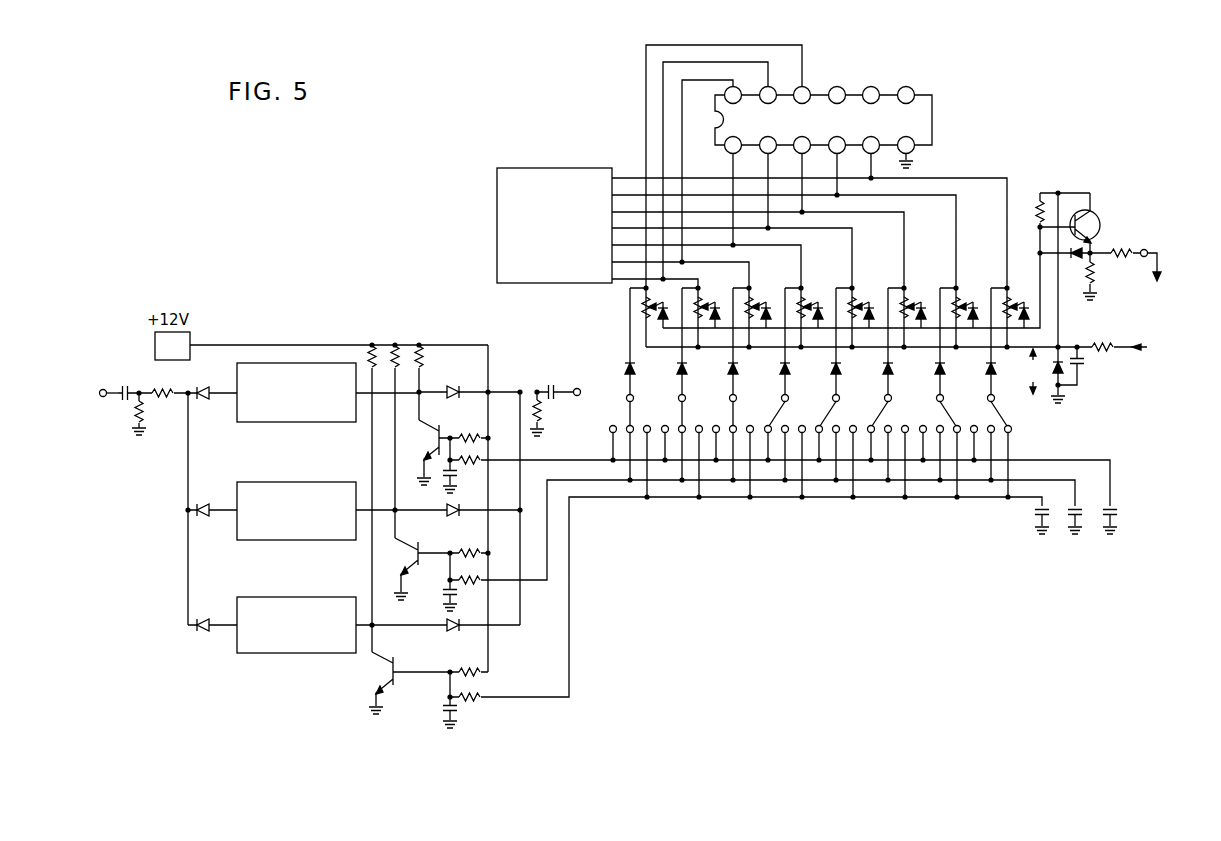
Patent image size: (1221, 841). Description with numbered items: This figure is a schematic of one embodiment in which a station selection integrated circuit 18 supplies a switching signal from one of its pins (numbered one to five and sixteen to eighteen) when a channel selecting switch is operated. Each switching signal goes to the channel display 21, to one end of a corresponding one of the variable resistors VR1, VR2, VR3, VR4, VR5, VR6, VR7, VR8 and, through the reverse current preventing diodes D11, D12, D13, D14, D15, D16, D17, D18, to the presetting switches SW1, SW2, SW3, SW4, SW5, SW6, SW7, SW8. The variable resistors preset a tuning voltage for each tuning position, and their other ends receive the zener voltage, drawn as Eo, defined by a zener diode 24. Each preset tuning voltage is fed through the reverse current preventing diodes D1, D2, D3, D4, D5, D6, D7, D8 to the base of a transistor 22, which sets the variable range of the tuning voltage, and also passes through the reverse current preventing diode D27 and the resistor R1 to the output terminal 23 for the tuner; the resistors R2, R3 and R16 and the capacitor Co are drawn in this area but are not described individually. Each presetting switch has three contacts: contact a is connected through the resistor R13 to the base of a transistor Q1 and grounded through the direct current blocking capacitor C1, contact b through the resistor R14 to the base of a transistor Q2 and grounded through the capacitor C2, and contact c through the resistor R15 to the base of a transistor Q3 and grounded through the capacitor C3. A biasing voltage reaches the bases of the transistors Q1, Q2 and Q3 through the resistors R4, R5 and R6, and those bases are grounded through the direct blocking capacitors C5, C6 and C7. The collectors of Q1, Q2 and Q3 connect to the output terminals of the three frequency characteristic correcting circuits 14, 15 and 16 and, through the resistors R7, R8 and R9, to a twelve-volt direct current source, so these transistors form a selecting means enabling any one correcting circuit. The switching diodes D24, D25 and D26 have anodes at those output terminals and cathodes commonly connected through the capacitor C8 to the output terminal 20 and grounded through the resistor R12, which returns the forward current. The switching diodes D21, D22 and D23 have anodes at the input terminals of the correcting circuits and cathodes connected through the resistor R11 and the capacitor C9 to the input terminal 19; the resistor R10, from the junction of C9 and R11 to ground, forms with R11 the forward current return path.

The frequency characteristic correcting circuit 14 is at (292, 603).
The frequency characteristic correcting circuit 15 is at (288, 486).
The frequency characteristic correcting circuit 16 is at (277, 422).
The station selection integrated circuit 18 is at (932, 100).
The input terminal 19 is at (102, 390).
The output terminal 20 is at (577, 388).
The channel display 21 is at (545, 166).
The transistor 22 is at (1097, 213).
The output terminal 23 is at (1146, 249).
The zener diode 24 is at (1048, 387).
The resistor R1 is at (1118, 258).
The resistor R2 is at (1096, 281).
The resistor R3 is at (1038, 209).
The resistor R4 is at (471, 667).
The resistor R5 is at (471, 552).
The resistor R6 is at (471, 435).
The resistor R7 is at (374, 348).
The resistor R8 is at (398, 348).
The resistor R9 is at (424, 360).
The resistor R10 is at (137, 416).
The resistor R11 is at (163, 399).
The resistor R12 is at (541, 410).
The resistor R13 is at (473, 703).
The resistor R14 is at (474, 587).
The resistor R15 is at (473, 467).
The resistor R16 is at (1106, 351).
The direct current blocking capacitor C1 is at (1032, 522).
The direct current blocking capacitor C2 is at (1065, 522).
The direct current blocking capacitor C3 is at (1100, 522).
The direct blocking capacitor C5 is at (443, 477).
The direct blocking capacitor C6 is at (442, 594).
The direct blocking capacitor C7 is at (442, 717).
The capacitor C8 is at (549, 384).
The capacitor C9 is at (126, 385).
The capacitor Co is at (1083, 362).
The reverse current preventing diode D1 is at (1019, 324).
The reverse current preventing diode D2 is at (968, 324).
The reverse current preventing diode D3 is at (916, 324).
The reverse current preventing diode D4 is at (864, 324).
The reverse current preventing diode D5 is at (813, 324).
The reverse current preventing diode D6 is at (761, 324).
The reverse current preventing diode D7 is at (710, 324).
The reverse current preventing diode D8 is at (658, 324).
The reverse current preventing diode D11 is at (994, 367).
The reverse current preventing diode D12 is at (944, 364).
The reverse current preventing diode D13 is at (892, 364).
The reverse current preventing diode D14 is at (840, 364).
The reverse current preventing diode D15 is at (789, 364).
The reverse current preventing diode D16 is at (737, 364).
The reverse current preventing diode D17 is at (686, 364).
The reverse current preventing diode D18 is at (634, 364).
The switching diode D21 is at (203, 617).
The switching diode D22 is at (202, 503).
The switching diode D23 is at (202, 390).
The switching diode D24 is at (448, 631).
The switching diode D25 is at (447, 515).
The switching diode D26 is at (462, 384).
The reverse current preventing diode D27 is at (1076, 260).
The transistor Q1 is at (396, 688).
The transistor Q2 is at (422, 569).
The transistor Q3 is at (437, 434).
The variable resistor VR1 is at (1020, 309).
The variable resistor VR2 is at (969, 309).
The variable resistor VR3 is at (917, 309).
The variable resistor VR4 is at (865, 309).
The variable resistor VR5 is at (814, 309).
The variable resistor VR6 is at (762, 309).
The variable resistor VR7 is at (711, 309).
The variable resistor VR8 is at (659, 316).
The presetting switch SW1 is at (1000, 418).
The presetting switch SW2 is at (937, 447).
The presetting switch SW3 is at (893, 447).
The presetting switch SW4 is at (840, 447).
The presetting switch SW5 is at (789, 447).
The presetting switch SW6 is at (742, 447).
The presetting switch SW7 is at (683, 418).
The presetting switch SW8 is at (632, 418).
The reference voltage Eo is at (1031, 371).